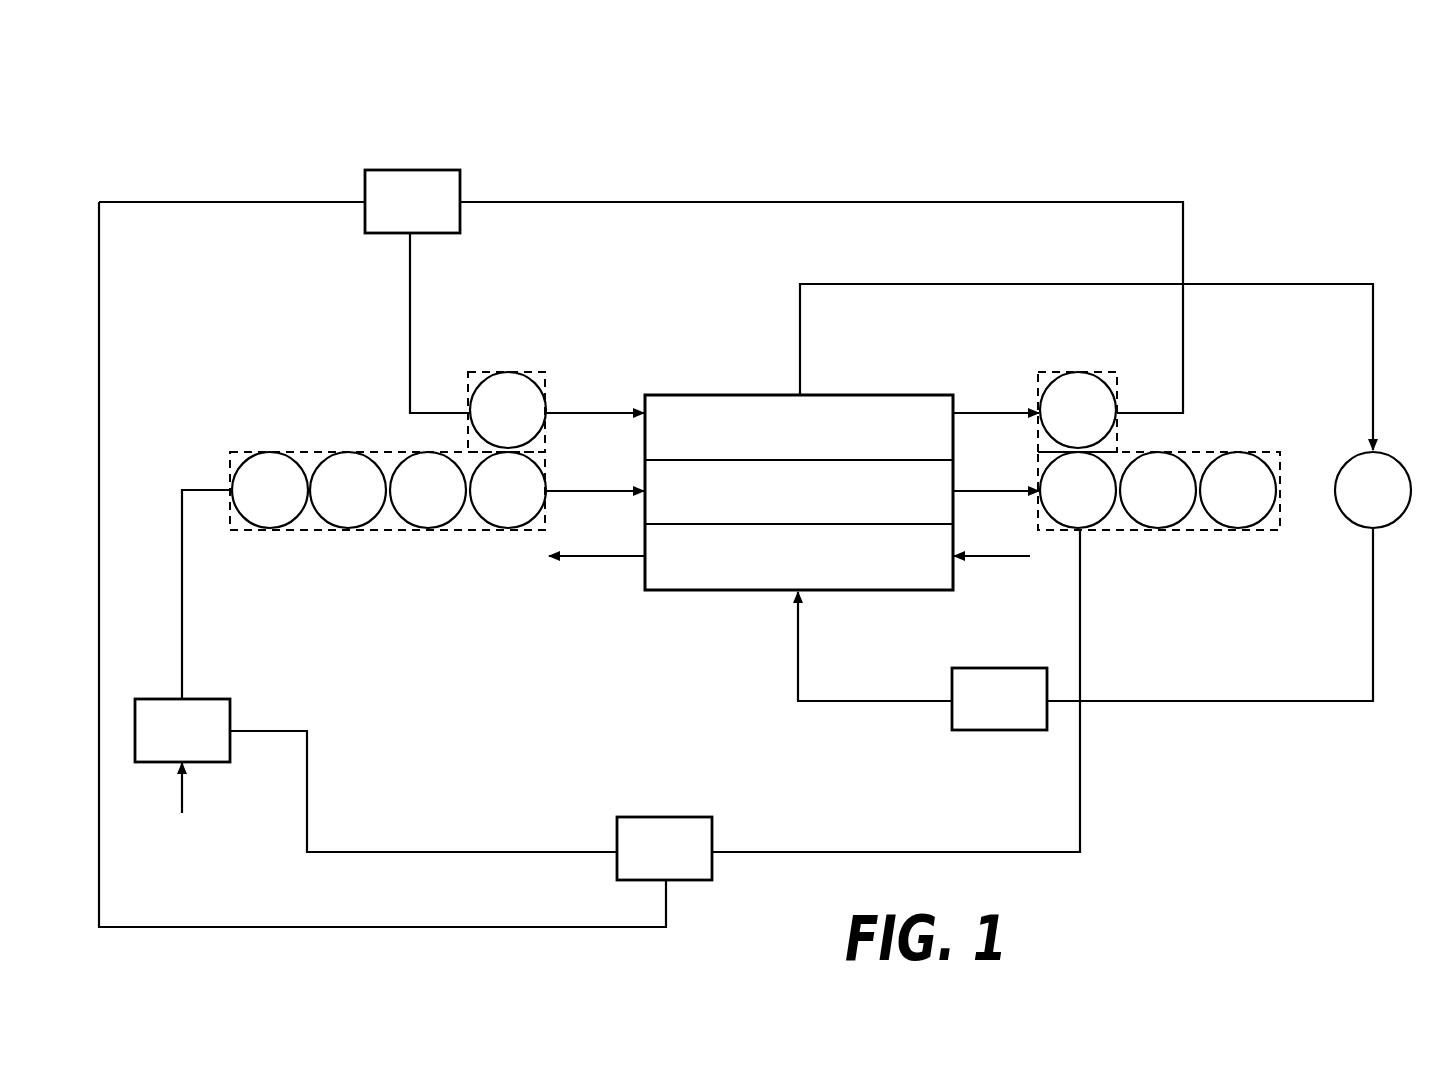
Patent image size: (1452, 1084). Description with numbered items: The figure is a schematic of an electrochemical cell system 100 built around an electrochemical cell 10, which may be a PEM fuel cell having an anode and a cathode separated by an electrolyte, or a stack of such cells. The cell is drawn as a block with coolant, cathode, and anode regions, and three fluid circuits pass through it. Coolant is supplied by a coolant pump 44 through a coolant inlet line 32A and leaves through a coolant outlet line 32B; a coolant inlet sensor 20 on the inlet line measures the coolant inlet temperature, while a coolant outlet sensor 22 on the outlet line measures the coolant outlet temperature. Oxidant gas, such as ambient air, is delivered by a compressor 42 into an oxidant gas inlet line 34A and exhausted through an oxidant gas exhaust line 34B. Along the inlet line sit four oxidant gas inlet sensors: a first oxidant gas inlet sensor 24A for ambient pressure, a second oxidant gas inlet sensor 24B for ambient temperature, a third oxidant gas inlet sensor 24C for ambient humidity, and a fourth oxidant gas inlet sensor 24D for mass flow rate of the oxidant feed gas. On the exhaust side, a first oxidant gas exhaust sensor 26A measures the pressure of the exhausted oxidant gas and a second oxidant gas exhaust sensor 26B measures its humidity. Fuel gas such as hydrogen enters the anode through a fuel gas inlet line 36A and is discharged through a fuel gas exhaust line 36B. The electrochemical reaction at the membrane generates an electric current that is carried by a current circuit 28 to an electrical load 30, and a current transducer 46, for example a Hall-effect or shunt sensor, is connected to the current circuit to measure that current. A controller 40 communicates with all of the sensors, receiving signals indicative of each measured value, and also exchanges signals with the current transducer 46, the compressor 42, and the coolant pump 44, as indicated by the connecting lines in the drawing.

The electrochemical cell system 100 is at (253, 126).
The electrochemical cell 10 is at (710, 358).
The coolant inlet sensor 20 is at (505, 356).
The coolant outlet sensor 22 is at (1081, 358).
The first oxidant gas inlet sensor 24A is at (448, 546).
The second oxidant gas inlet sensor 24B is at (348, 490).
The third oxidant gas inlet sensor 24C is at (428, 490).
The fourth oxidant gas inlet sensor 24D is at (508, 490).
The first oxidant gas exhaust sensor 26A is at (1177, 546).
The second oxidant gas exhaust sensor 26B is at (1198, 490).
The current circuit 28 is at (1238, 262).
The electrical load 30 is at (1400, 446).
The coolant inlet line 32A is at (595, 398).
The coolant outlet line 32B is at (996, 398).
The oxidant gas inlet line 34A is at (595, 476).
The oxidant gas exhaust line 34B is at (996, 476).
The fuel gas inlet line 36A is at (992, 541).
The fuel gas exhaust line 36B is at (597, 541).
The controller 40 is at (653, 862).
The compressor 42 is at (170, 744).
The coolant pump 44 is at (400, 215).
The current transducer 46 is at (987, 712).